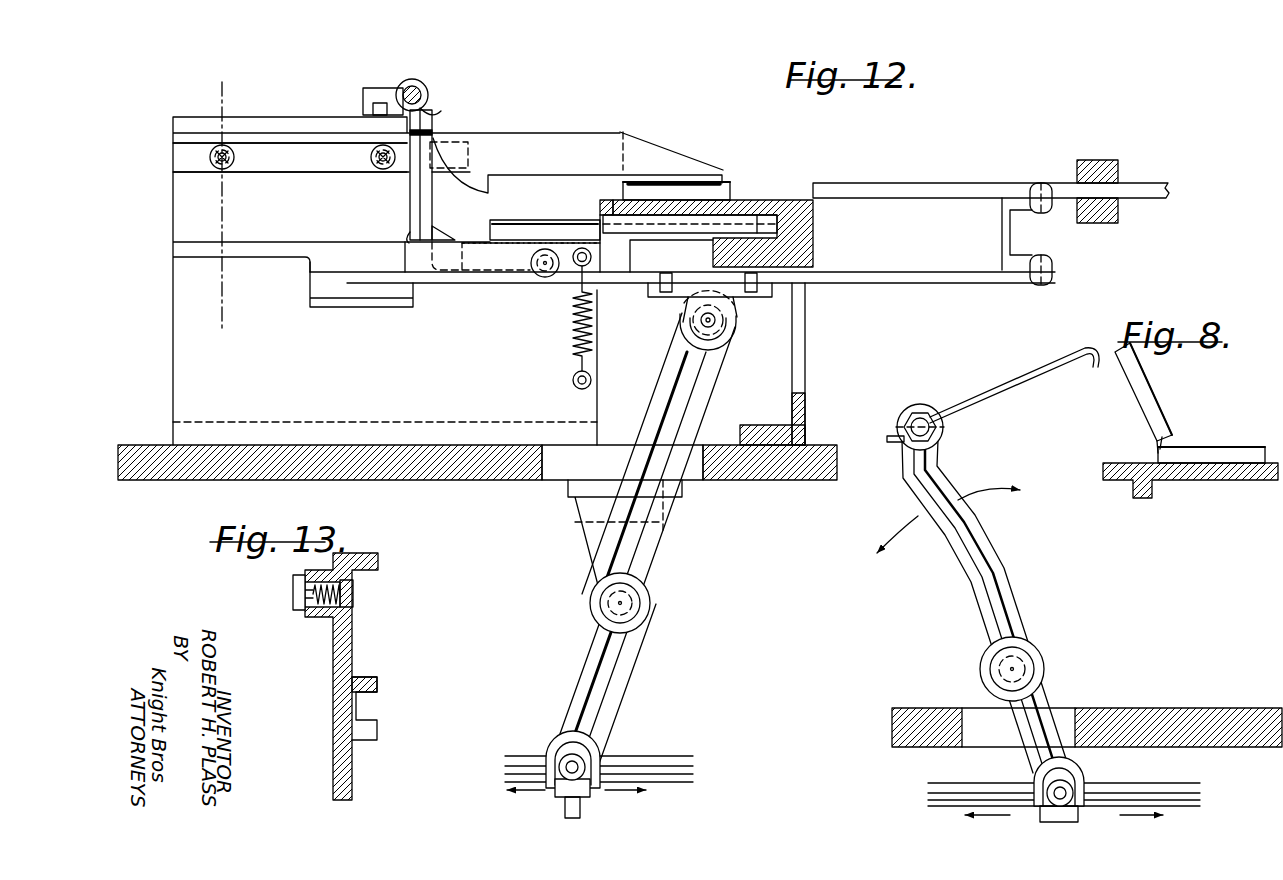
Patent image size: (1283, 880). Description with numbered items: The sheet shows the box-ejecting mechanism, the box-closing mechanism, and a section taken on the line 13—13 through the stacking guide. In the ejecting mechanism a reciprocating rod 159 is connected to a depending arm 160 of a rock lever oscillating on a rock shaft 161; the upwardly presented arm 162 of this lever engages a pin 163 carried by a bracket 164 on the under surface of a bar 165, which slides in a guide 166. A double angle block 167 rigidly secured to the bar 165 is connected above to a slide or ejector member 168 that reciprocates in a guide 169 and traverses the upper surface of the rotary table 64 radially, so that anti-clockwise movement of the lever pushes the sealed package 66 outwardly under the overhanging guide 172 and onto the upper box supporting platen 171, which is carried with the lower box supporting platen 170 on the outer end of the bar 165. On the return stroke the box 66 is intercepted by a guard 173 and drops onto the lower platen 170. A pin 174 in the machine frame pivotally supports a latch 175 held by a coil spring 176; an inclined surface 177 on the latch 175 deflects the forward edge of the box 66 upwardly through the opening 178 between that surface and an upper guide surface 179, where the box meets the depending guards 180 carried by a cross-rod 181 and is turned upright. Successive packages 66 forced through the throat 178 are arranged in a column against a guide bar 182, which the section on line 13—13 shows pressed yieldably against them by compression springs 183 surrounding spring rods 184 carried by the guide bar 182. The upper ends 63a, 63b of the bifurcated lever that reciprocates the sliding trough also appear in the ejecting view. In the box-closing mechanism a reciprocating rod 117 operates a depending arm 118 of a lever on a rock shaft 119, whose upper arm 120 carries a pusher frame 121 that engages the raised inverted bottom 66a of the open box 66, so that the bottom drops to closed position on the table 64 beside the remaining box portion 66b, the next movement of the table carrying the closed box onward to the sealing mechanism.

In FIG. 12, the section line 13— 13 is at (227, 199).
In FIG. 12, the cross-rod 181 is at (424, 86).
In FIG. 12, the guide bar 182 is at (290, 157).
In FIG. 13, the guide bar 182 is at (356, 593).
In FIG. 12, the compression springs 183 is at (228, 147).
In FIG. 13, the compression springs 183 is at (320, 612).
In FIG. 12, the spring rods 184 is at (216, 166).
In FIG. 13, the spring rods 184 is at (296, 593).
In FIG. 12, the depending guards 180 is at (408, 191).
In FIG. 12, the opening 178 is at (442, 192).
In FIG. 12, the upper guide surface 179 is at (468, 178).
In FIG. 12, the overhanging guide 172 is at (603, 163).
In FIG. 12, the upper end of bifurcated lever 63a is at (677, 181).
In FIG. 12, the upper end of bifurcated lever 63b is at (697, 184).
In FIG. 12, the box 66 is at (420, 216).
In FIG. 8, the box 66 is at (1197, 395).
In FIG. 12, the rotary table 64 is at (760, 200).
In FIG. 8, the rotary table 64 is at (1243, 471).
In FIG. 12, the guard 173 is at (600, 203).
In FIG. 12, the lower box supporting platen 170 is at (483, 237).
In FIG. 12, the inclined surface 177 is at (447, 242).
In FIG. 12, the upper box supporting platen 171 is at (687, 222).
In FIG. 12, the slide or ejector member 168 is at (917, 191).
In FIG. 12, the guide 169 is at (1119, 168).
In FIG. 12, the double angle block 167 is at (1010, 235).
In FIG. 12, the bar 165 is at (953, 280).
In FIG. 12, the guide 166 is at (323, 292).
In FIG. 13, the guide 166 is at (370, 731).
In FIG. 12, the latch 175 is at (497, 268).
In FIG. 12, the pin 174 is at (545, 278).
In FIG. 12, the coil spring 176 is at (572, 339).
In FIG. 12, the bracket 164 is at (730, 299).
In FIG. 12, the pin 163 is at (702, 322).
In FIG. 12, the upwardly presented arm 162 is at (663, 413).
In FIG. 12, the rock shaft 161 is at (638, 603).
In FIG. 12, the depending arm 160 is at (588, 677).
In FIG. 12, the reciprocating rod 159 is at (684, 758).
In FIG. 8, the pusher frame 121 is at (1027, 382).
In FIG. 8, the upper arm 120 is at (998, 568).
In FIG. 8, the rock shaft 119 is at (1028, 660).
In FIG. 8, the depending arm 118 is at (1020, 730).
In FIG. 8, the reciprocating rod 117 is at (1192, 788).
In FIG. 8, the raised inverted bottom 66a is at (1147, 413).
In FIG. 8, the box portion 66b is at (1237, 447).